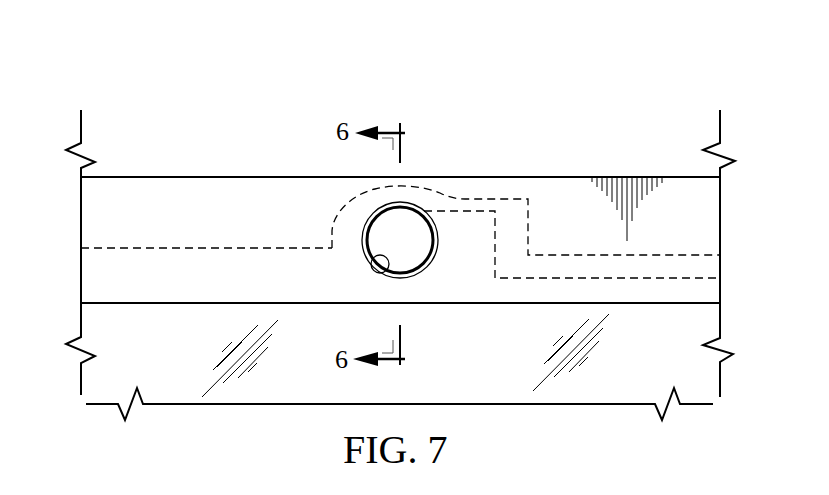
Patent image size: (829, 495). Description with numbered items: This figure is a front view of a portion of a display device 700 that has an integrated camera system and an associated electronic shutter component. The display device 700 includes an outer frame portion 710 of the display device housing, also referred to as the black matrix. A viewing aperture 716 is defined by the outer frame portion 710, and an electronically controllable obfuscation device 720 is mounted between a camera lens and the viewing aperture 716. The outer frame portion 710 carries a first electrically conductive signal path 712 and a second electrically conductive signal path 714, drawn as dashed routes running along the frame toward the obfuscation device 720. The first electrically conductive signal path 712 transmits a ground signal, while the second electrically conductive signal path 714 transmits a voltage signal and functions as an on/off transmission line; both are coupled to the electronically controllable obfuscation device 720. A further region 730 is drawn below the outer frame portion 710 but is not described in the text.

The display device 700 is at (268, 81).
The outer frame portion 710 is at (572, 184).
The first electrically conductive signal path 712 is at (207, 247).
The second electrically conductive signal path 714 is at (466, 210).
The viewing aperture 716 is at (372, 271).
The electronically controllable obfuscation device 720 is at (388, 233).
The second panel 730 is at (683, 367).